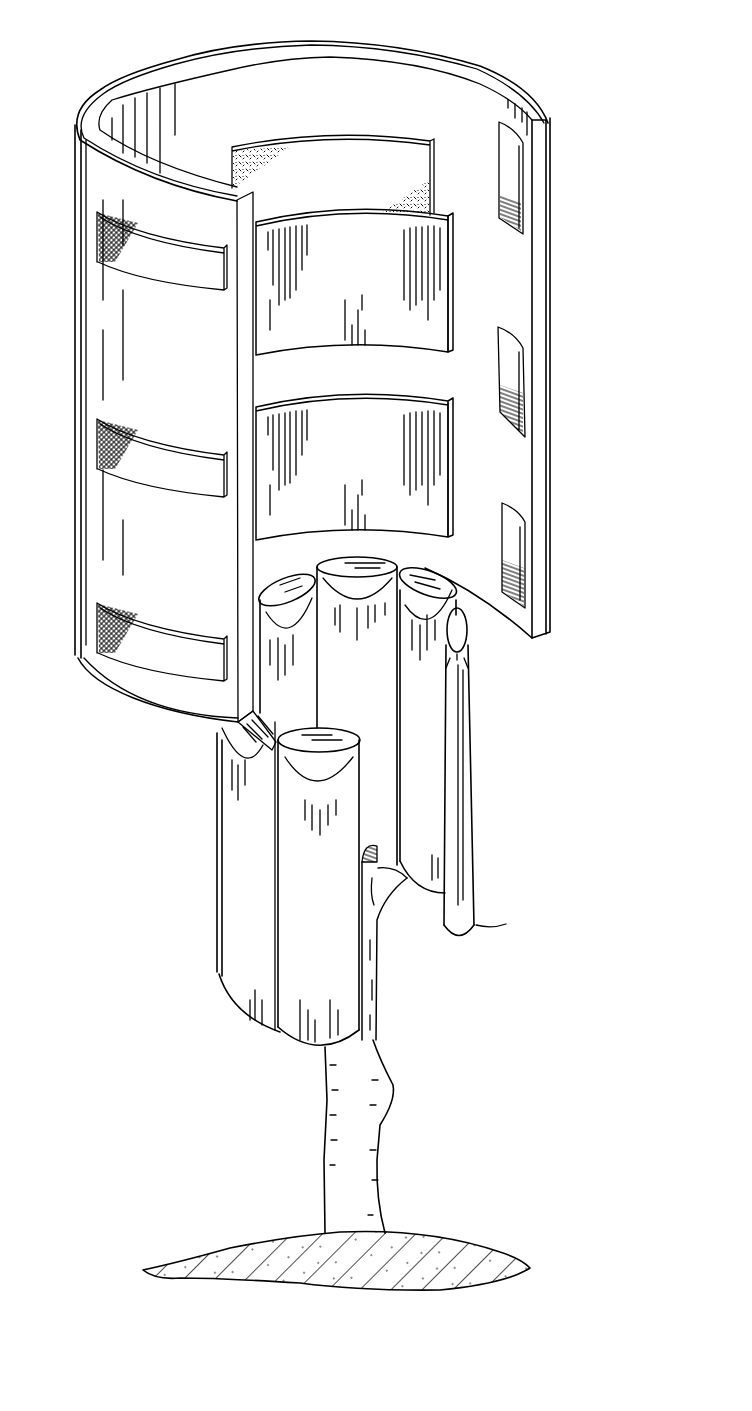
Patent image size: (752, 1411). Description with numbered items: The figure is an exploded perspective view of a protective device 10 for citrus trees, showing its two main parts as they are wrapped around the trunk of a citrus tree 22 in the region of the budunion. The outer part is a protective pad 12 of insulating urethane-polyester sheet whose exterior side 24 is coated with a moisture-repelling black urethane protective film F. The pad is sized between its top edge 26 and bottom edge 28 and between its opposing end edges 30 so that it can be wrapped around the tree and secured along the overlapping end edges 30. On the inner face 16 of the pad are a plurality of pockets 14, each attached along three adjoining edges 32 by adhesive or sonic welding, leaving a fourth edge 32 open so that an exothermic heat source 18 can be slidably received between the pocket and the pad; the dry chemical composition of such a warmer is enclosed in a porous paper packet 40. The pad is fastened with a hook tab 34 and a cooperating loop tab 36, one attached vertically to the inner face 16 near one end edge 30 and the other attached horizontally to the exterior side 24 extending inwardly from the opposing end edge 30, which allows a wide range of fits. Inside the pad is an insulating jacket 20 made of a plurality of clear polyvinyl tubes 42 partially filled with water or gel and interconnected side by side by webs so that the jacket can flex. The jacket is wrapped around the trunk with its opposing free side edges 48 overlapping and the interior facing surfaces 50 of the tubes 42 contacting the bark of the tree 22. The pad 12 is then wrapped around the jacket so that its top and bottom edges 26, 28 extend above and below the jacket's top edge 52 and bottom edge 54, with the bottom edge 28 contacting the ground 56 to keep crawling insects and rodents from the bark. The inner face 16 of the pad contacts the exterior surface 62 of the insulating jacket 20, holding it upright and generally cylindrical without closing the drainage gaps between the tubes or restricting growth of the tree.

The protective device 10 is at (104, 748).
The protective pad 12 is at (97, 112).
The pocket 14 is at (370, 263).
The inner face 16 is at (355, 101).
The exothermic heat source 18 is at (407, 131).
The insulating jacket 20 is at (128, 955).
The citrus tree 22 is at (325, 1128).
The exterior side 24 is at (215, 393).
The top edge 26 is at (432, 60).
The bottom edge 28 is at (543, 640).
The end edge 30 is at (544, 291).
The pocket edge 32 is at (455, 313).
The hook tab 34 is at (508, 188).
The loop tab 36 is at (118, 262).
The porous paper packet 40 is at (291, 146).
The tube 42 is at (433, 742).
The free side edge 48 is at (447, 913).
The interior facing surface 50 is at (375, 678).
The top edge of insulating jacket 52 is at (466, 622).
The bottom edge of insulating jacket 54 is at (470, 930).
The ground 56 is at (227, 1253).
The exterior surface 62 is at (335, 913).
The protective film F is at (118, 556).